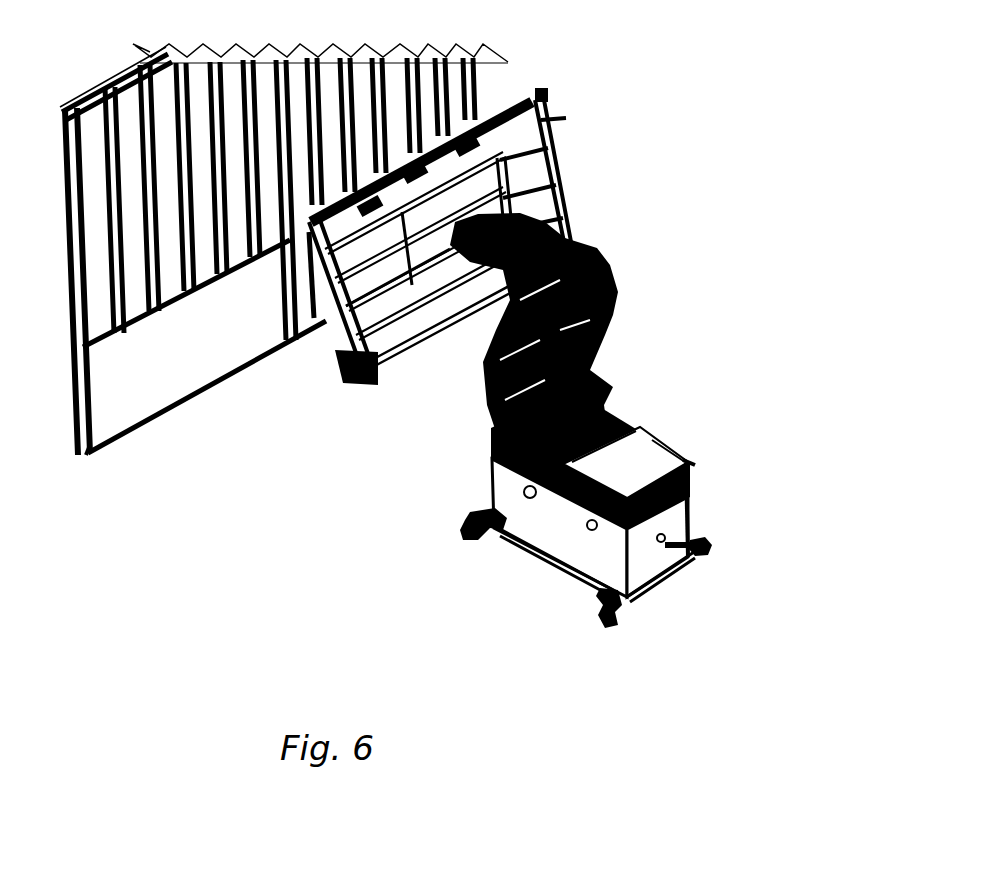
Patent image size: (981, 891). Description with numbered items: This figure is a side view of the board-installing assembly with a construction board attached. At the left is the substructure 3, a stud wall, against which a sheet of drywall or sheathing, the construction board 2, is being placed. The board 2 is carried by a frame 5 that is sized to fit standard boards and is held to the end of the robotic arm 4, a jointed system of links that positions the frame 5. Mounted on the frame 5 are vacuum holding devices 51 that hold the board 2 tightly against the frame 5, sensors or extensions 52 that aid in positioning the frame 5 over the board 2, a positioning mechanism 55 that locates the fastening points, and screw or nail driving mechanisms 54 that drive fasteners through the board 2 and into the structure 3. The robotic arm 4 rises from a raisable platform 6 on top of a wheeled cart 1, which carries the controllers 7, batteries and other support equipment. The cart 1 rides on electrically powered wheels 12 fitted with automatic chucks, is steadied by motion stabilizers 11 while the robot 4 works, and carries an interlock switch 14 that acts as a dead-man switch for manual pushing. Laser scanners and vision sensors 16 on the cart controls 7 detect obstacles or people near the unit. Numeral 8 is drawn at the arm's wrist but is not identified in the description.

The cart 1 is at (562, 522).
The construction board 2 is at (323, 338).
The substructure 3 is at (166, 411).
The robotic arm 4 is at (613, 323).
The frame 5 is at (392, 360).
The raisable platform 6 is at (353, 378).
The controllers 7 is at (430, 328).
The gripper 8 is at (603, 263).
The motion stabilizers 11 is at (692, 543).
The wheels 12 is at (500, 542).
The interlock switch 14 is at (690, 503).
The laser scanners and vision sensors 16 is at (529, 500).
The holding devices 51 is at (505, 104).
The sensors or extensions 52 is at (540, 102).
The screw/nail-driving mechanisms 54 is at (466, 110).
The positioning mechanism 55 is at (556, 128).